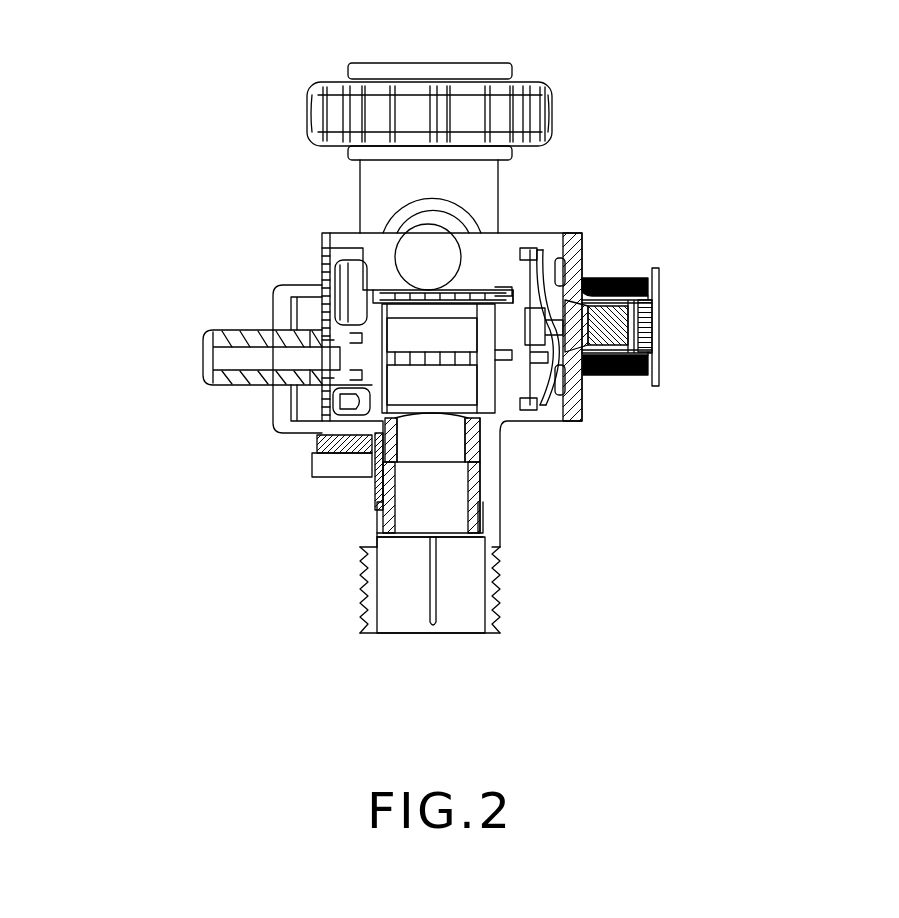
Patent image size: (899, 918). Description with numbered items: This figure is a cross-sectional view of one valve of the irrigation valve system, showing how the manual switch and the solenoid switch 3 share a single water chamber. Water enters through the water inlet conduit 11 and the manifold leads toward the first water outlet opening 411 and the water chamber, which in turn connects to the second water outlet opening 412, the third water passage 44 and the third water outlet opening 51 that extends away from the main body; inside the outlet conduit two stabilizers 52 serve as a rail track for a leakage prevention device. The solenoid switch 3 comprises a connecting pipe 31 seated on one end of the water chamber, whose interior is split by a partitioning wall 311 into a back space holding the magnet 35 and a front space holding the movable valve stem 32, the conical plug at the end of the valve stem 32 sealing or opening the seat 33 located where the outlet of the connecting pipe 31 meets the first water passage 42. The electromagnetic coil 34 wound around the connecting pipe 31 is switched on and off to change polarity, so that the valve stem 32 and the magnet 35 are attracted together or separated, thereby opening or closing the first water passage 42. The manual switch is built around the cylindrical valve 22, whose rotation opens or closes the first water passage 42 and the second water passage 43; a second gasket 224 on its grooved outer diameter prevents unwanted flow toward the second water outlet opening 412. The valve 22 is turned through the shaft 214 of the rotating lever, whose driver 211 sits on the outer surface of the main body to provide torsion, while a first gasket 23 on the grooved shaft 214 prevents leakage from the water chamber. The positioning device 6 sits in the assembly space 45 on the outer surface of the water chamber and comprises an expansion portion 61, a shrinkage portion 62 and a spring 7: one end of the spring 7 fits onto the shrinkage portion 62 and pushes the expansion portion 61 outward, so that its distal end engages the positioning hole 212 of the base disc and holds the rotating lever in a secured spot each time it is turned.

The water inlet conduit 11 is at (503, 63).
The valve 22 is at (360, 253).
The first gasket 23 is at (340, 353).
The shaft 214 is at (332, 337).
The driver 211 is at (205, 362).
The positioning hole 212 is at (316, 442).
The second water passage 43 is at (322, 290).
The first water passage 42 is at (577, 245).
The first water outlet opening 411 is at (435, 248).
The second gasket 224 is at (513, 323).
The positioning device 6 is at (306, 498).
The expansion portion 61 is at (322, 440).
The shrinkage portion 62 is at (368, 437).
The spring 7 is at (357, 453).
The assembly space 45 is at (377, 457).
The third water outlet opening 51 is at (405, 642).
The stabilizers 52 is at (432, 630).
The third water passage 44 is at (450, 570).
The second water outlet opening 412 is at (432, 423).
The solenoid switch 3 is at (698, 344).
The connecting pipe 31 is at (674, 387).
The valve stem 32 is at (595, 378).
The seat 33 is at (540, 347).
The electromagnetic coil 34 is at (625, 283).
The magnet 35 is at (653, 312).
The partitioning wall 311 is at (662, 353).